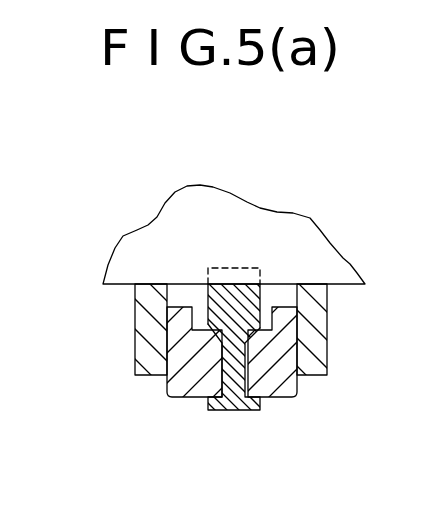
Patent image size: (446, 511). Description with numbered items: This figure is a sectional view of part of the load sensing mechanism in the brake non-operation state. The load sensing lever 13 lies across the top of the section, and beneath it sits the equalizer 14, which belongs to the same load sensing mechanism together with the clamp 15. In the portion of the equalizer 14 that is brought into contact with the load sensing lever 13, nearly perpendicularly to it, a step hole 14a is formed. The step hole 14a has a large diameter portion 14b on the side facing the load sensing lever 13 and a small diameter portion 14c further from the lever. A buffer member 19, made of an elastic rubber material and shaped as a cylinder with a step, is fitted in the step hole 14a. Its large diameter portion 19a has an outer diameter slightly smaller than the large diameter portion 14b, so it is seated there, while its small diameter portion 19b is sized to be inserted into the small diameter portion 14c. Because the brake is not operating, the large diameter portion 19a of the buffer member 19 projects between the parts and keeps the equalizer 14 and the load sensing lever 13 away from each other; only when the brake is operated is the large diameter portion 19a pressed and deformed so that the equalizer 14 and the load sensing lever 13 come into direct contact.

The load sensing lever 13 is at (243, 208).
The equalizer 14 is at (285, 387).
The step hole 14a is at (200, 361).
The large diameter portion 14b is at (192, 320).
The small diameter portion 14c is at (180, 396).
The clamp 15 is at (145, 358).
The buffer member 19 is at (239, 371).
The large diameter portion 19a is at (250, 302).
The small diameter portion 19b is at (237, 383).